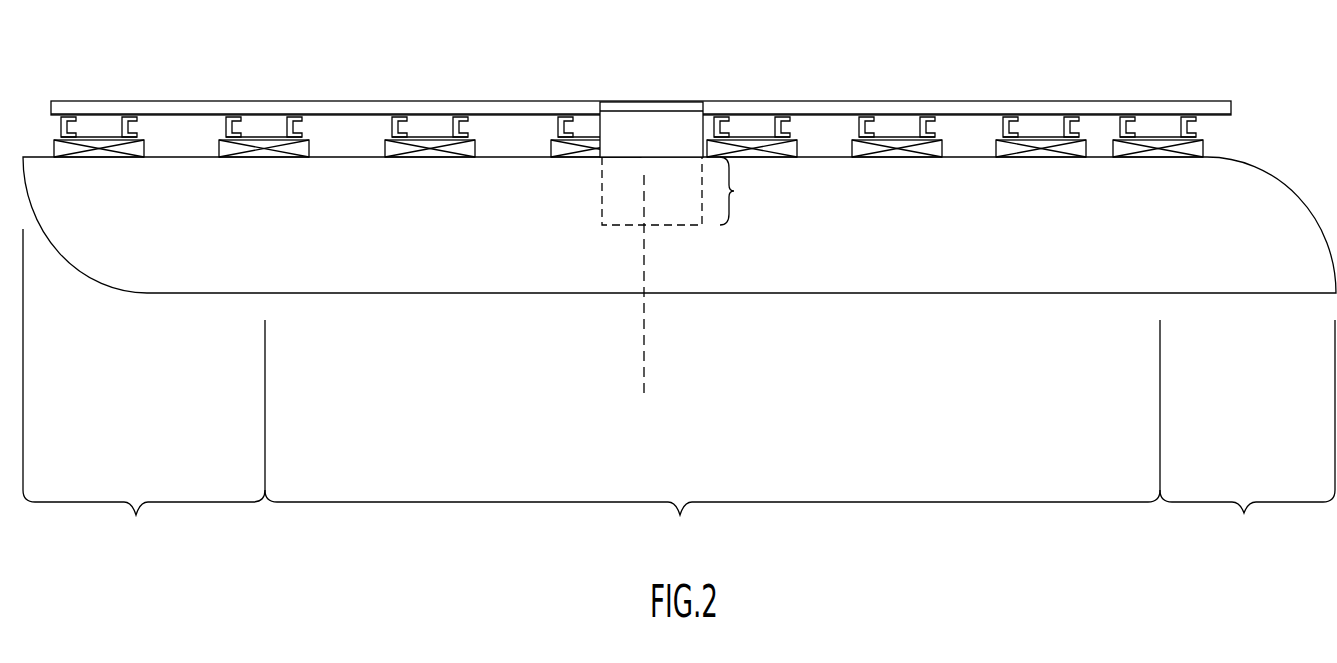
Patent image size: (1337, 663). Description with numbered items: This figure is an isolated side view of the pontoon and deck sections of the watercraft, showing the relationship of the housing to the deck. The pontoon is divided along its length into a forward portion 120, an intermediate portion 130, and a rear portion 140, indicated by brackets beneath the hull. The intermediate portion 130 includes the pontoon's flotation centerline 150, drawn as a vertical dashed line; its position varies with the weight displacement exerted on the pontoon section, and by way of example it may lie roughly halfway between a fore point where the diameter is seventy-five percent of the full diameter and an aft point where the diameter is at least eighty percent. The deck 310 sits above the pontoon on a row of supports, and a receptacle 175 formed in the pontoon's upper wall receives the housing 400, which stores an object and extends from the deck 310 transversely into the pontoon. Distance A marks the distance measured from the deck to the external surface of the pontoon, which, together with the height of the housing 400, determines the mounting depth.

The deck 310 is at (1092, 100).
The receptacle 175 is at (654, 138).
The housing 400 is at (688, 206).
The flotation centerline 150 is at (633, 376).
The forward portion 120 is at (144, 395).
The intermediate portion 130 is at (712, 441).
The rear portion 140 is at (1247, 441).
The distance A is at (738, 191).